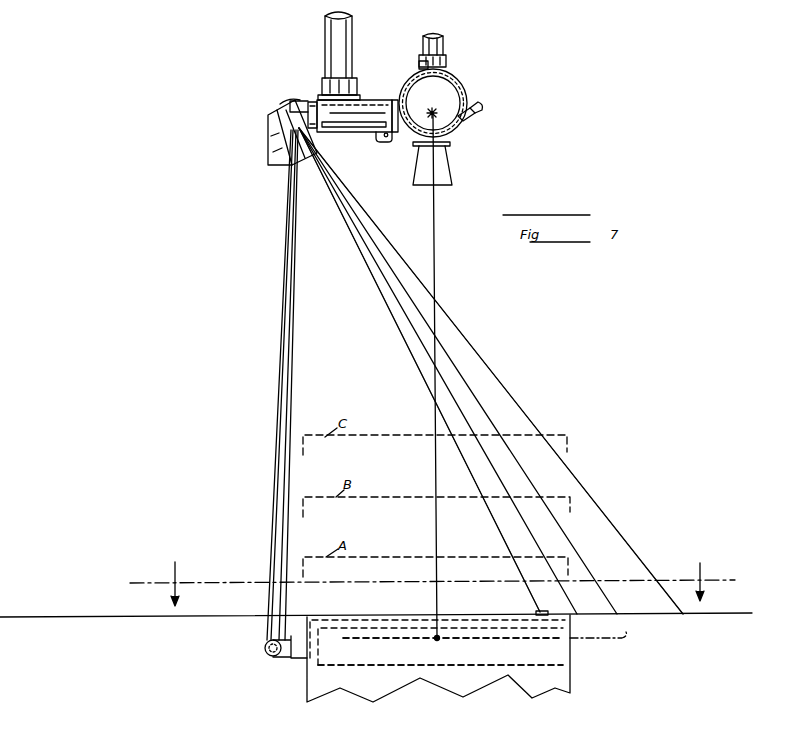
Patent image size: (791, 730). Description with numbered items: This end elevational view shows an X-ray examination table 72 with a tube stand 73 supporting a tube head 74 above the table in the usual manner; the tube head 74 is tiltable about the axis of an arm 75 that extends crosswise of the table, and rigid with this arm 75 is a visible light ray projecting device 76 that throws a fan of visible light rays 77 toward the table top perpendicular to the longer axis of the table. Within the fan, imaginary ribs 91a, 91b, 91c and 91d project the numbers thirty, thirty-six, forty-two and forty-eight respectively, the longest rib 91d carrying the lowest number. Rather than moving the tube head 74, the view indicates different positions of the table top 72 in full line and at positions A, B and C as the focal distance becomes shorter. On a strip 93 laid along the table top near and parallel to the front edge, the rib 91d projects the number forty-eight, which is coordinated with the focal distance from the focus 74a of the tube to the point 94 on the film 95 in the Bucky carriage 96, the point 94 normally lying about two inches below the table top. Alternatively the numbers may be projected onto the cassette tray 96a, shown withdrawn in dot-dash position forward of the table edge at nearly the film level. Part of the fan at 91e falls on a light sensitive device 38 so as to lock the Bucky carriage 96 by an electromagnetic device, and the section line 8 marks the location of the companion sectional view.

The tube stand 73 is at (352, 52).
The tube head 74 is at (458, 94).
The focus of the tube 74a is at (433, 113).
The arm 75 is at (368, 134).
The visible light ray projecting device 76 is at (282, 107).
The fan of visible light rays 77 is at (340, 197).
The imaginary rib 91a is at (507, 393).
The imaginary rib 91b is at (472, 390).
The imaginary rib 91c is at (450, 370).
The imaginary rib 91d is at (413, 360).
The part of the fan of light rays 91e is at (278, 515).
The table 72 is at (360, 617).
The light sensitive device 38 is at (273, 657).
The strip 93 is at (547, 617).
The point on the film 94 is at (440, 640).
The film 95 is at (388, 638).
The Bucky carriage 96 is at (352, 667).
The cassette tray 96a is at (598, 640).
The section line 8- 8 is at (432, 574).